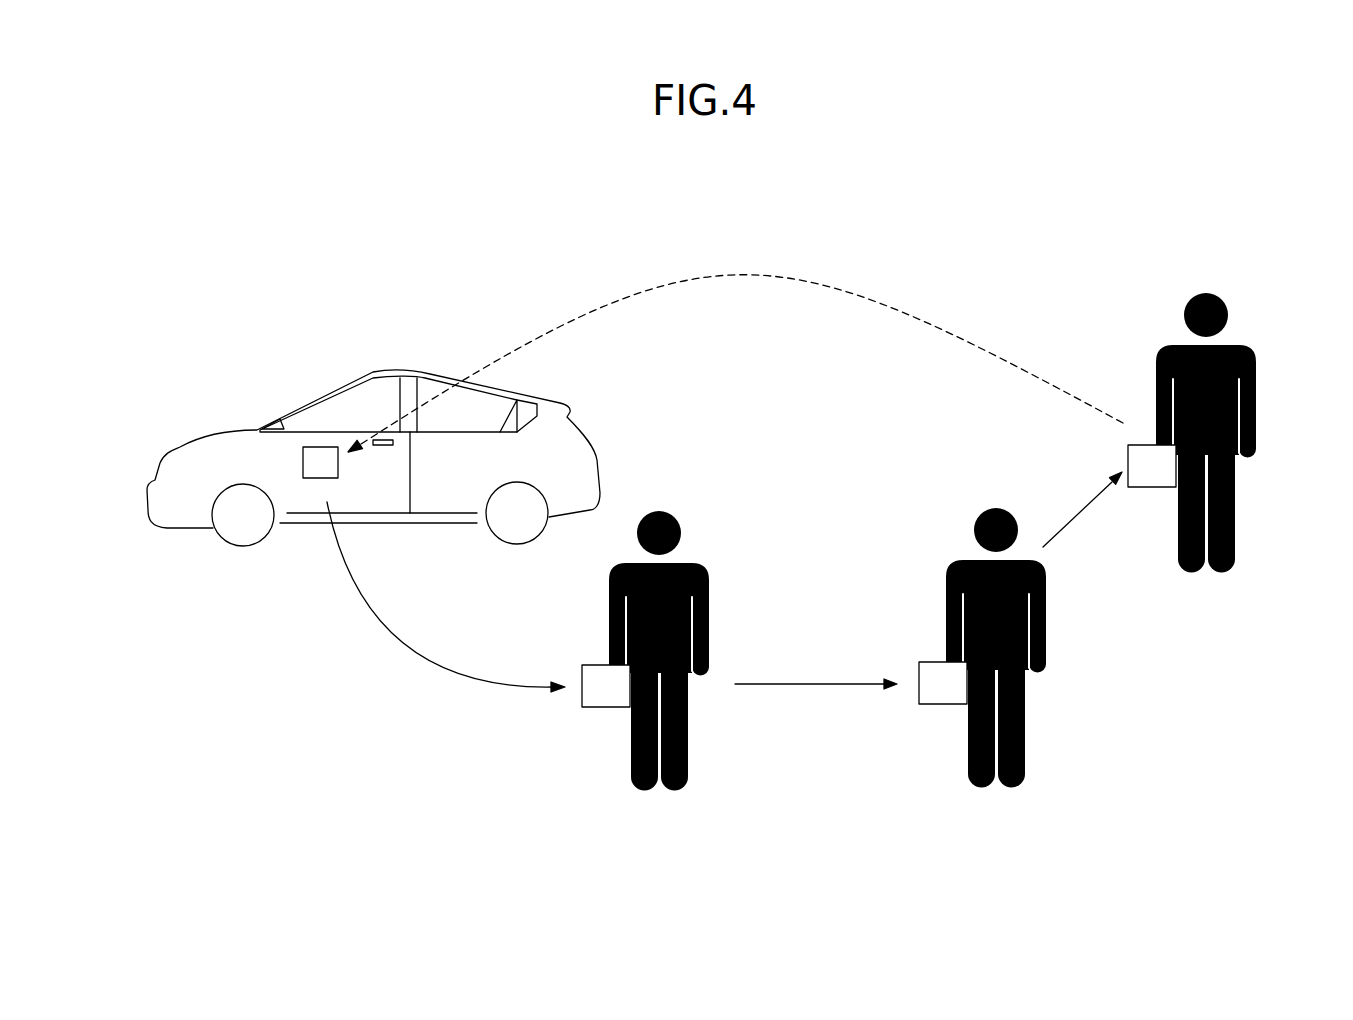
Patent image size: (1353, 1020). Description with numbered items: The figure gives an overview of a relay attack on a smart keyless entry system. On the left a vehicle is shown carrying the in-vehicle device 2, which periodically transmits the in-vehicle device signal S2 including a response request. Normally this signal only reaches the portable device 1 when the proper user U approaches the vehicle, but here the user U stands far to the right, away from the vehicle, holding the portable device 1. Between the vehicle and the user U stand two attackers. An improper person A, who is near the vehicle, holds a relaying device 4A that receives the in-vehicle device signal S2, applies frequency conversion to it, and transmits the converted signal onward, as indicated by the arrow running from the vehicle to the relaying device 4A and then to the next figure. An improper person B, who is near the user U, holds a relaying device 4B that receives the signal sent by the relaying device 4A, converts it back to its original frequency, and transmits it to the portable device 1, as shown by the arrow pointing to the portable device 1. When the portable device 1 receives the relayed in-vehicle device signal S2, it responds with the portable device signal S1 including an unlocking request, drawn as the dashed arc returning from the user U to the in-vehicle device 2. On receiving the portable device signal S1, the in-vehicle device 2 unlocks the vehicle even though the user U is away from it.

The portable device 1 is at (1145, 487).
The in-vehicle device 2 is at (303, 457).
The relaying device 4A is at (600, 708).
The relaying device 4B is at (932, 705).
The improper person A is at (675, 514).
The improper person B is at (1013, 512).
The user U is at (1223, 297).
The portable device signal S1 is at (885, 302).
The in-vehicle device signal S2 is at (382, 625).